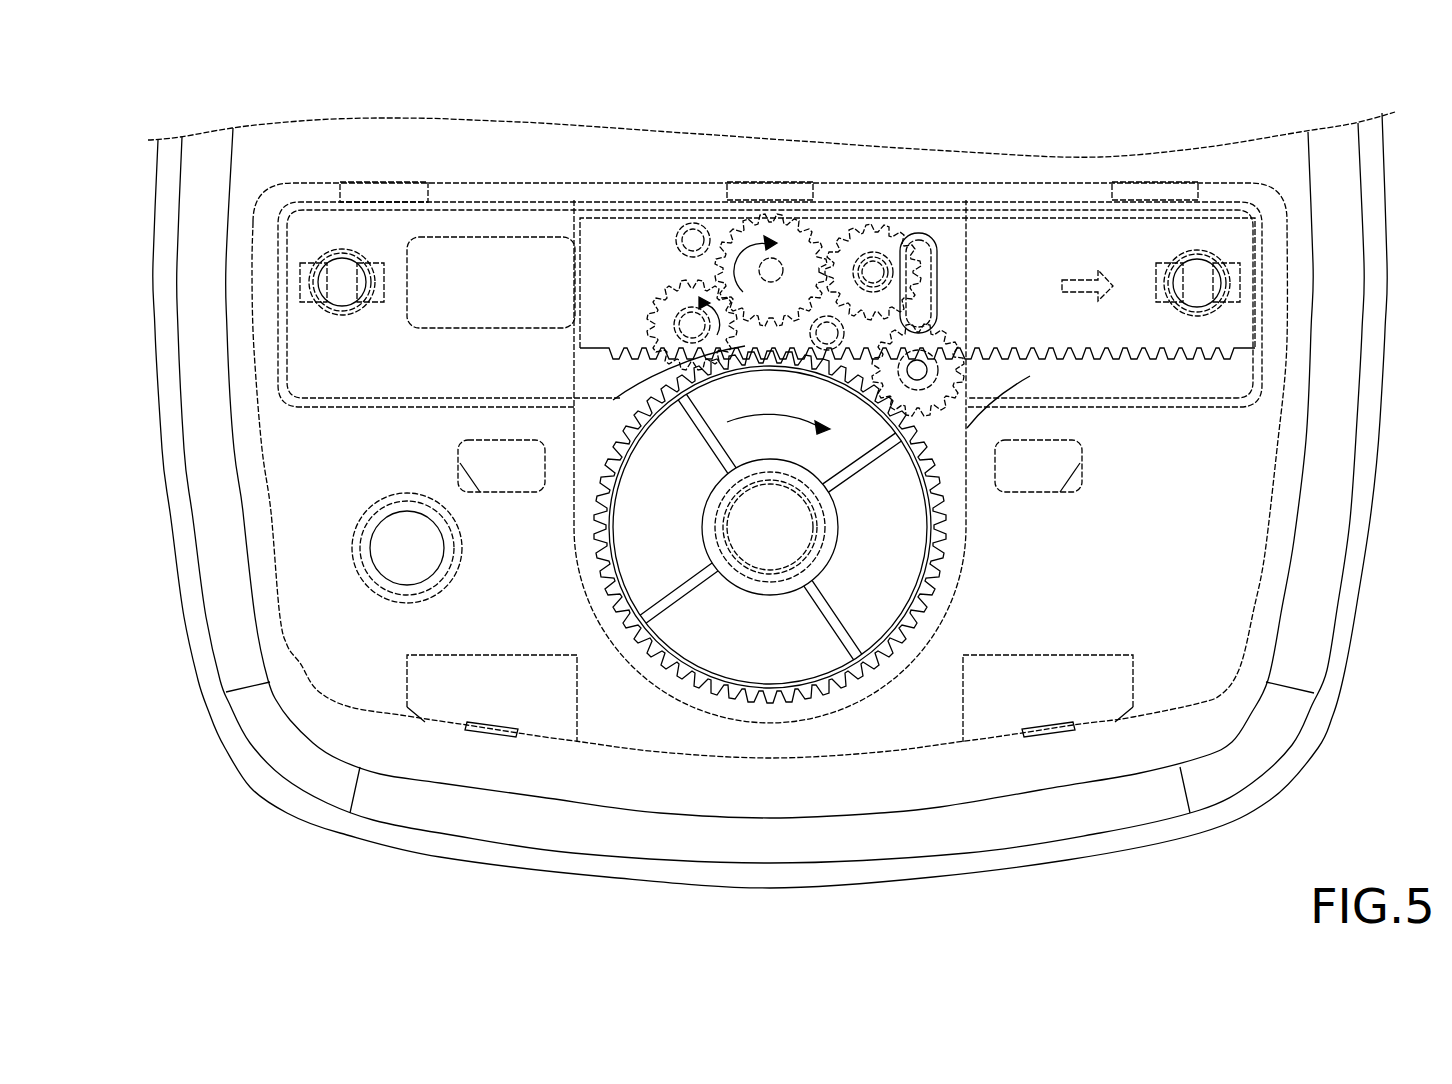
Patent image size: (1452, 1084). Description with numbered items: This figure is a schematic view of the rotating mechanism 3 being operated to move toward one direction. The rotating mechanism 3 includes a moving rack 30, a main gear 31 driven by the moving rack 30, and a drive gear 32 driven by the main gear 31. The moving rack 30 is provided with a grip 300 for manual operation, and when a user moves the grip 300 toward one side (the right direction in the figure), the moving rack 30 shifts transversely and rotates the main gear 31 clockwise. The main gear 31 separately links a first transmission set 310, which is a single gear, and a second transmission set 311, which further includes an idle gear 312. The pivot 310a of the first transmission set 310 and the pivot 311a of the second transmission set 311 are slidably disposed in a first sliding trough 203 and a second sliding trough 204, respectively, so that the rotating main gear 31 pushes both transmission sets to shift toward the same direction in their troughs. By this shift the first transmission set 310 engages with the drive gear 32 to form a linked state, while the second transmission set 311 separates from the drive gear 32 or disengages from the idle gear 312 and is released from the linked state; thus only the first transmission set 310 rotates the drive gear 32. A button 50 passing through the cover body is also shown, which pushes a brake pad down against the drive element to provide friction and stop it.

The rotating mechanism 3 is at (607, 421).
The moving rack 30 is at (1037, 240).
The grip 300 is at (918, 240).
The main gear 31 is at (720, 637).
The drive gear 32 is at (783, 235).
The first transmission set 310 is at (672, 300).
The pivot of first transmission set 310a is at (687, 317).
The idle gear 312 is at (860, 245).
The second transmission set 311 is at (945, 385).
The pivot of second transmission set 311a is at (930, 368).
The first sliding trough 203 is at (655, 335).
The second sliding trough 204 is at (897, 372).
The button 50 is at (390, 547).